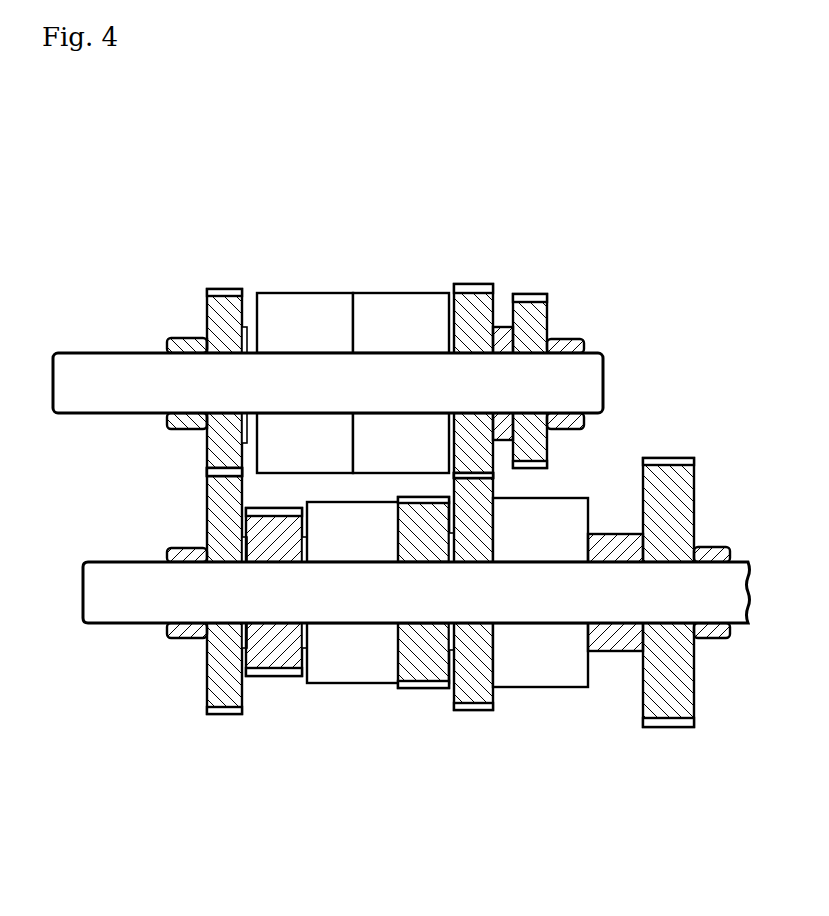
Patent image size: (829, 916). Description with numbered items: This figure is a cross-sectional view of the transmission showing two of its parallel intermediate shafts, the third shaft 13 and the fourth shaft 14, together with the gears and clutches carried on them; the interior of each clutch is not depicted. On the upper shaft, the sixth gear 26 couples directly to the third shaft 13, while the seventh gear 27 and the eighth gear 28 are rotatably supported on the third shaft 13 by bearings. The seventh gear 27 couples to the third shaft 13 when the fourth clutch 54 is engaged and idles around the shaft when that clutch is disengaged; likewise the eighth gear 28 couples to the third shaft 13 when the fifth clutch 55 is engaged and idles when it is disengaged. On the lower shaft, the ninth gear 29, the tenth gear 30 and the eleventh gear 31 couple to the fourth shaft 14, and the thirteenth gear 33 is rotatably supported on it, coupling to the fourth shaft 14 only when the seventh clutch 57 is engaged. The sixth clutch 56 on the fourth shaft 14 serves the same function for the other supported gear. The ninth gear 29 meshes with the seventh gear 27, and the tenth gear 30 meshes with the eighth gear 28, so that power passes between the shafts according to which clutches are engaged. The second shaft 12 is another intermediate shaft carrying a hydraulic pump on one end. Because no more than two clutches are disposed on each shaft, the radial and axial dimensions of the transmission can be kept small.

The second shaft 12 is at (268, 662).
The third shaft 13 is at (105, 372).
The fourth shaft 14 is at (112, 615).
The sixth gear 26 is at (527, 310).
The seventh gear 27 is at (225, 307).
The eighth gear 28 is at (465, 299).
The ninth gear 29 is at (222, 700).
The tenth gear 30 is at (483, 696).
The eleventh gear 31 is at (418, 674).
The thirteenth gear 33 is at (681, 712).
The fourth clutch 54 is at (304, 304).
The fifth clutch 55 is at (398, 304).
The sixth clutch 56 is at (352, 672).
The seventh clutch 57 is at (546, 680).